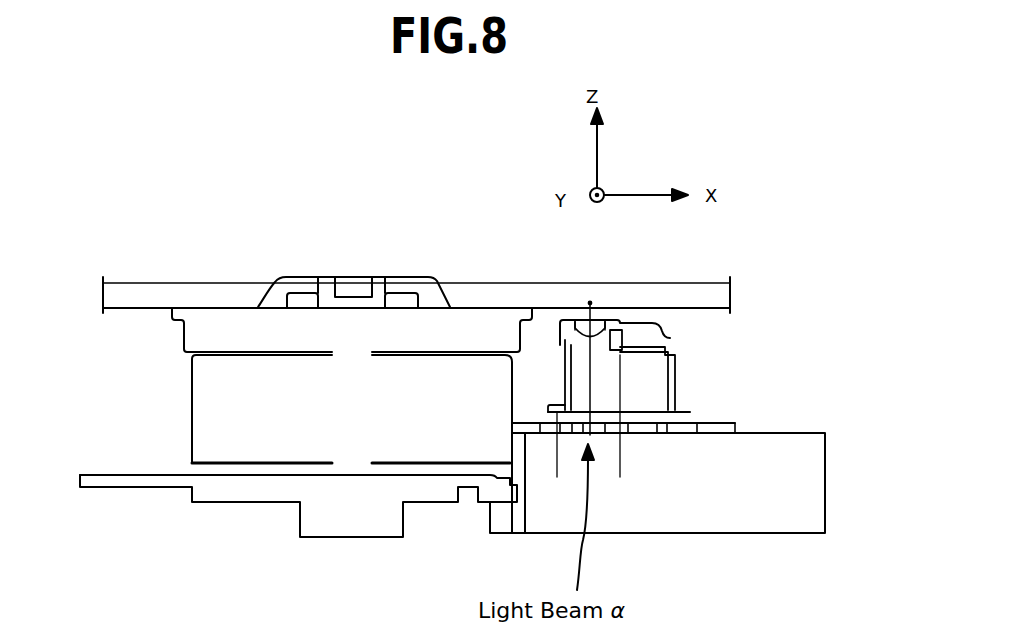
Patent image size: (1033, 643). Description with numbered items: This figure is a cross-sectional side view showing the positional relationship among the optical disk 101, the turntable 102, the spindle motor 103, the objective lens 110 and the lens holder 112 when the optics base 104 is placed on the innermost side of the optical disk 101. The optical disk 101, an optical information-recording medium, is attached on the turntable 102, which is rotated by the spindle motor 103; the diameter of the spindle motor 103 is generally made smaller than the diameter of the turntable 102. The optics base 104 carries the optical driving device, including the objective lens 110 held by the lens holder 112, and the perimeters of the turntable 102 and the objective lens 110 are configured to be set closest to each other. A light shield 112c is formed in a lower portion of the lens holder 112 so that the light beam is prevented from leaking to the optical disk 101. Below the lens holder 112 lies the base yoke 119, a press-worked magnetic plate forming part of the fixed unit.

The optical disk 101 is at (675, 300).
The turntable 102 is at (518, 318).
The spindle motor 103 is at (233, 430).
The optics base 104 is at (713, 493).
The objective lens 110 is at (670, 338).
The lens holder 112 is at (660, 378).
The light shield 112c is at (553, 412).
The base yoke 119 is at (722, 424).